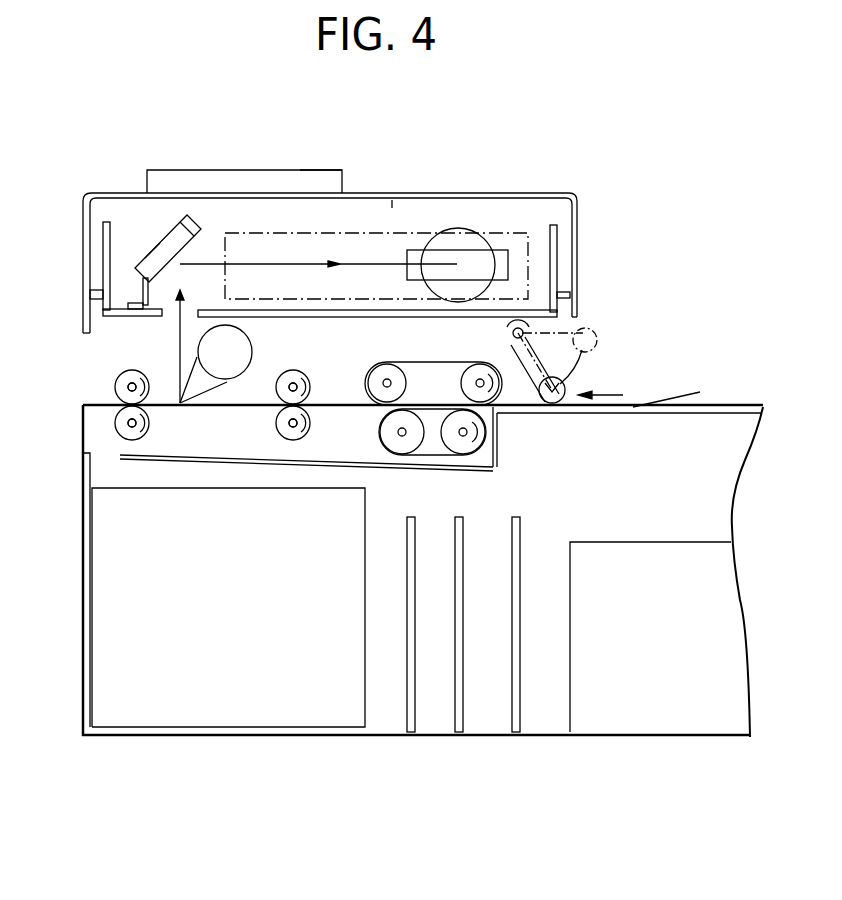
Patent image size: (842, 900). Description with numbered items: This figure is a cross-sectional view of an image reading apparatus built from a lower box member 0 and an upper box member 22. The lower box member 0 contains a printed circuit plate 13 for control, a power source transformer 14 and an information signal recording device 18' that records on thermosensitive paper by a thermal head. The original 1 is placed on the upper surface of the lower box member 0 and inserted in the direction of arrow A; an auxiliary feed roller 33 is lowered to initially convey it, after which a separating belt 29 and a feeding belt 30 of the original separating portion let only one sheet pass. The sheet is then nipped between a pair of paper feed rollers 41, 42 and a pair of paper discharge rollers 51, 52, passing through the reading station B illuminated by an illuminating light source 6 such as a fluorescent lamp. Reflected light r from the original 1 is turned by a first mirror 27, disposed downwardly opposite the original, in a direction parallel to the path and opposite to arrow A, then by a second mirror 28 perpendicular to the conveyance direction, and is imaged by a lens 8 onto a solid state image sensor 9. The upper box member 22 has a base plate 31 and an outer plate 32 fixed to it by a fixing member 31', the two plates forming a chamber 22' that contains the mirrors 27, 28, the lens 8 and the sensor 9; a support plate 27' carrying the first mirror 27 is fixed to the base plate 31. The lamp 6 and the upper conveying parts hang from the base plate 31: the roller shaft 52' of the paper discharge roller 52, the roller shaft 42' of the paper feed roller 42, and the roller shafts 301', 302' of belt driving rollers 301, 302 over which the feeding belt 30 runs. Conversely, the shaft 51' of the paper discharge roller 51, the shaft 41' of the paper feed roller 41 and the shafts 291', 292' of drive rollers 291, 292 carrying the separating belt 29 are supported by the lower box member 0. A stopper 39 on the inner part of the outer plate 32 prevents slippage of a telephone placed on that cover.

The original 1 is at (674, 392).
The illuminating light source 6 is at (236, 342).
The lens 8 is at (457, 229).
The solid state image sensor 9 is at (407, 254).
The printed circuit plate 13 is at (513, 522).
The power source transformer 14 is at (655, 722).
The information signal recording device 18' is at (228, 638).
The upper box member 22 is at (330, 223).
The chamber 22' is at (411, 173).
The first mirror 27 is at (198, 242).
The support plate 27' is at (137, 226).
The second mirror 28 is at (503, 233).
The separating belt 29 is at (425, 455).
The drive roller 291 is at (384, 453).
The drive roller 292 is at (492, 435).
The shaft 291' is at (353, 421).
The shaft 292' is at (485, 466).
The feeding belt 30 is at (427, 362).
The belt driving roller 301 is at (370, 360).
The belt driving roller 302 is at (486, 360).
The roller shaft 301' is at (344, 386).
The roller shaft 302' is at (447, 386).
The base plate 31 is at (323, 235).
The fixing member 31' is at (328, 293).
The outer plate 32 is at (297, 193).
The auxiliary feed roller 33 is at (583, 356).
The stopper 39 is at (183, 178).
The paper feed roller 41 is at (266, 422).
The paper feed roller 42 is at (271, 387).
The shaft 41' is at (266, 437).
The roller shaft 42' is at (305, 354).
The paper discharge roller 51 is at (96, 422).
The paper discharge roller 52 is at (96, 386).
The shaft 51' is at (107, 450).
The roller shaft 52' is at (99, 363).
The direction of conveyance A is at (614, 393).
The reading station B is at (183, 410).
The reflected light r is at (180, 332).
The lower box member 0 is at (433, 740).